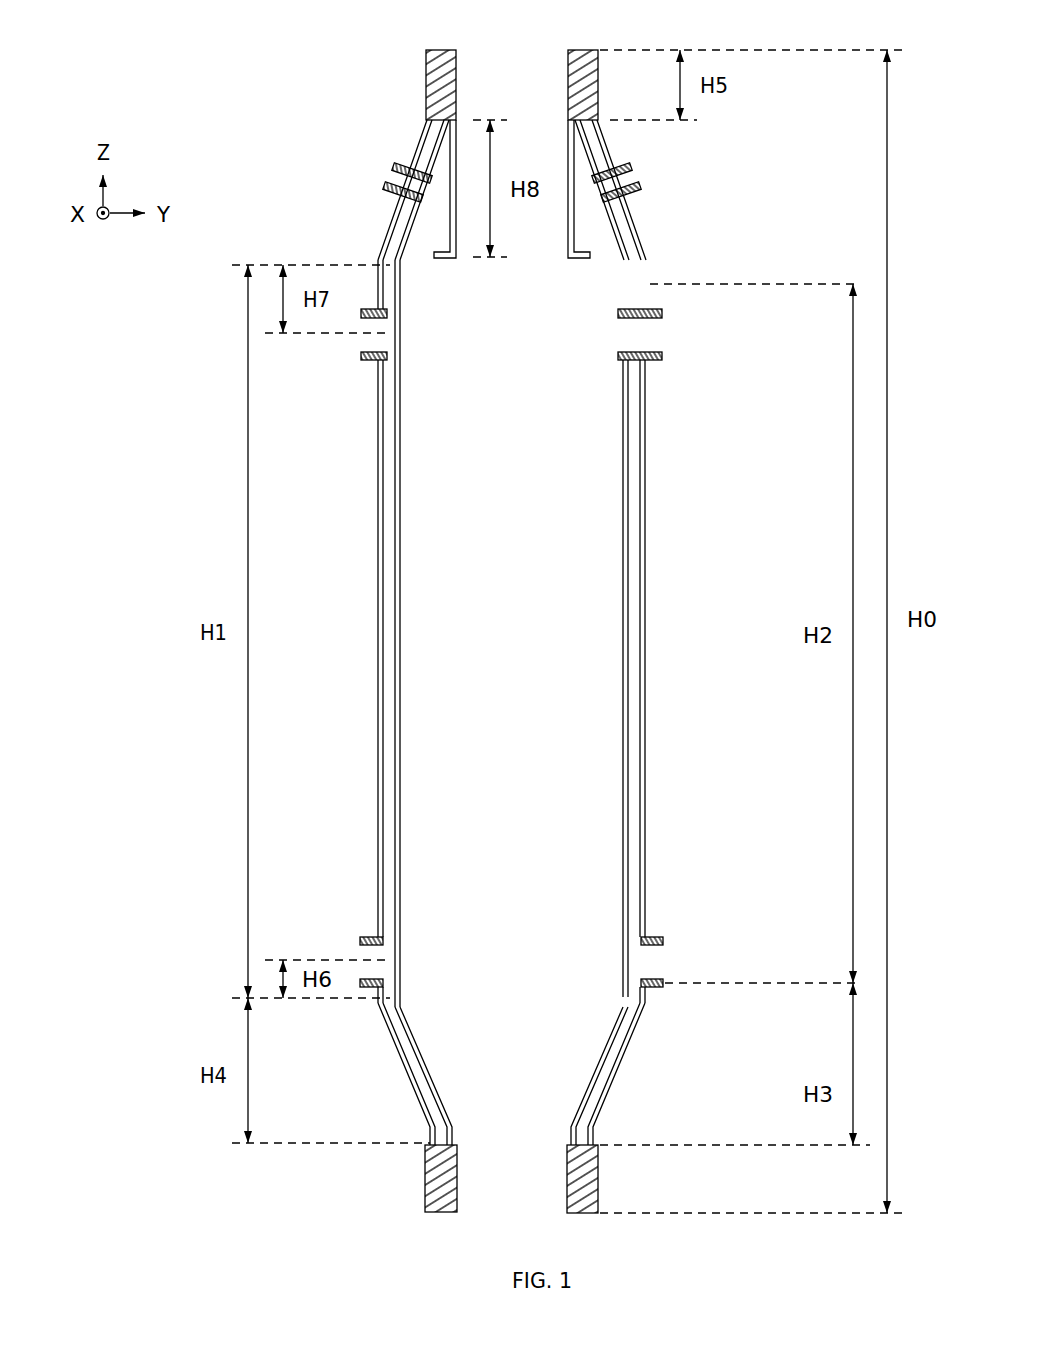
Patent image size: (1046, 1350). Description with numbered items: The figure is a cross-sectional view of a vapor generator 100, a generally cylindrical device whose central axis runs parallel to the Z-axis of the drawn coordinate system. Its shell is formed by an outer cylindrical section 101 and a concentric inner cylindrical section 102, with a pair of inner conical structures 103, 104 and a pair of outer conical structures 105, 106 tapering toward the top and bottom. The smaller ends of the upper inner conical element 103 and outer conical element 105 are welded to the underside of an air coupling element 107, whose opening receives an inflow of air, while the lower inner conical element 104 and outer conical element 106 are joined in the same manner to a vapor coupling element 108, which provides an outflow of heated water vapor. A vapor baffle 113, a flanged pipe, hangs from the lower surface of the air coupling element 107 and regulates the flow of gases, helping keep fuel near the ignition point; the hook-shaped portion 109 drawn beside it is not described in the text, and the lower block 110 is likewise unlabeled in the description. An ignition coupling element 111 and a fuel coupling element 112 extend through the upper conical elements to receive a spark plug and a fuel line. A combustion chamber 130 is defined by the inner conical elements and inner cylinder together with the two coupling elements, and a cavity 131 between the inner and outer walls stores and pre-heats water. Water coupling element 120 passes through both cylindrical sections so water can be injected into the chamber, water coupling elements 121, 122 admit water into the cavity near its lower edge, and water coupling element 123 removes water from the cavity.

The vapor generator 100 is at (280, 82).
The outer cylindrical section 101 is at (378, 480).
The inner cylindrical section 102 is at (396, 520).
The inner conical structure 103 is at (403, 238).
The inner conical structure 104 is at (418, 1070).
The outer conical structure 105 is at (638, 237).
The outer conical structure 106 is at (622, 1068).
The air coupling element 107 is at (432, 85).
The vapor coupling element 108 is at (425, 1190).
The hook portion 109 is at (500, 68).
The lower support member 110 is at (518, 1190).
The ignition coupling element 111 is at (387, 182).
The fuel coupling element 112 is at (638, 175).
The vapor baffle element 113 is at (567, 243).
The water coupling element 120 is at (652, 363).
The water coupling element 121 is at (652, 935).
The water coupling element 122 is at (372, 935).
The water coupling element 123 is at (367, 362).
The combustion chamber 130 is at (540, 560).
The cavity 131 is at (387, 590).